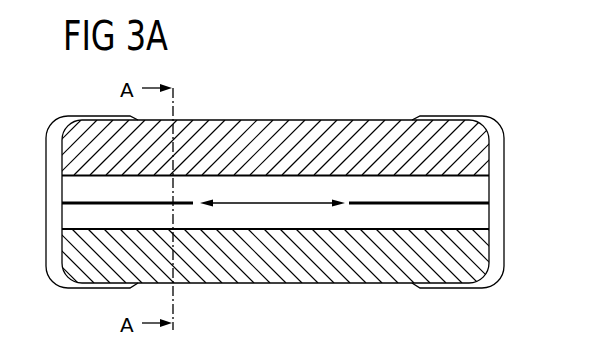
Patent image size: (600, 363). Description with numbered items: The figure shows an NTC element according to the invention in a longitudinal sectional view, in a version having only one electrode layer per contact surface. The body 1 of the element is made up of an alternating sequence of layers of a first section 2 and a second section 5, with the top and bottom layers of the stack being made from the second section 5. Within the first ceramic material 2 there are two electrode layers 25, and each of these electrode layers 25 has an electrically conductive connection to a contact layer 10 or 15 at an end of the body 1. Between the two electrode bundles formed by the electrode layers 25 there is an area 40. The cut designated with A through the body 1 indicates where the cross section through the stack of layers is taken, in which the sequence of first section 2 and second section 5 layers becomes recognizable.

The body 1 is at (406, 90).
The first section 2 is at (480, 187).
The second section 5 is at (247, 125).
The contact layer 10 is at (479, 204).
The contact layer 15 is at (60, 119).
The electrode layers 25 is at (480, 208).
The area 40 is at (272, 203).